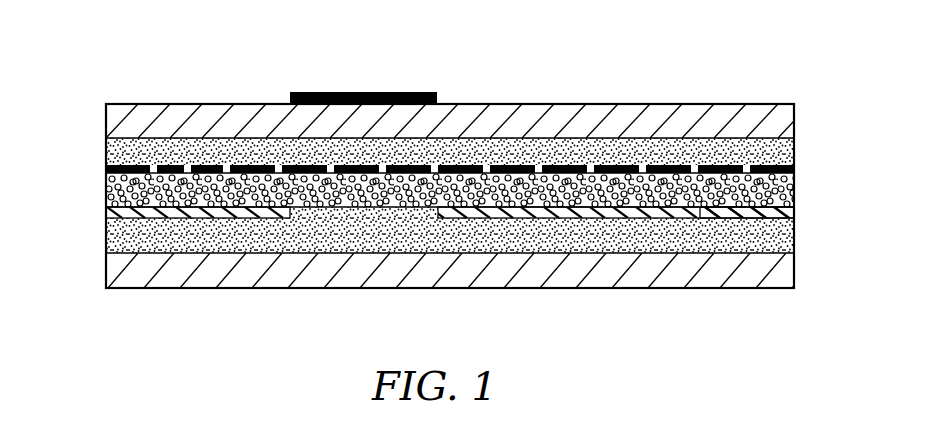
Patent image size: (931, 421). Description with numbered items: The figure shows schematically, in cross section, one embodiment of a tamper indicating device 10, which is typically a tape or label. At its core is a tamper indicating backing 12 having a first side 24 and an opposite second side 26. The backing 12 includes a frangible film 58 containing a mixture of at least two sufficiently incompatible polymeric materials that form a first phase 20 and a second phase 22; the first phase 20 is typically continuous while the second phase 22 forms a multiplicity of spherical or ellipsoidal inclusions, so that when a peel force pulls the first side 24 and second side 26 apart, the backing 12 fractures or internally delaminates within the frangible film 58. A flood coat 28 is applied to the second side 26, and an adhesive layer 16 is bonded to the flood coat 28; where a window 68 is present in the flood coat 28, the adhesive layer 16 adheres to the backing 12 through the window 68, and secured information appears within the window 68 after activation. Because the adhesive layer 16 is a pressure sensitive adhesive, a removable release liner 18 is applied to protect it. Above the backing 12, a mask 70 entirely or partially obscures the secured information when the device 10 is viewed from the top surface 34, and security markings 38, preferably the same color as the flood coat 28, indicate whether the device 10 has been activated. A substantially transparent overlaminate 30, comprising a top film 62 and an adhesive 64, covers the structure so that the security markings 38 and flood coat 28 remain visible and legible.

The tamper indicating device 10 is at (556, 32).
The tamper indicating backing 12 is at (101, 175).
The adhesive layer 16 is at (578, 235).
The release liner 18 is at (650, 272).
The first phase 20 is at (718, 192).
The second phase 22 is at (245, 210).
The first side 24 is at (753, 172).
The second side 26 is at (752, 208).
The flood coat 28 is at (513, 210).
The overlaminate 30 is at (812, 102).
The top surface 34 is at (803, 81).
The security markings 38 is at (226, 172).
The frangible film 58 is at (167, 208).
The top film 62 is at (495, 118).
The adhesive 64 is at (265, 147).
The window 68 is at (375, 207).
The mask 70 is at (360, 92).